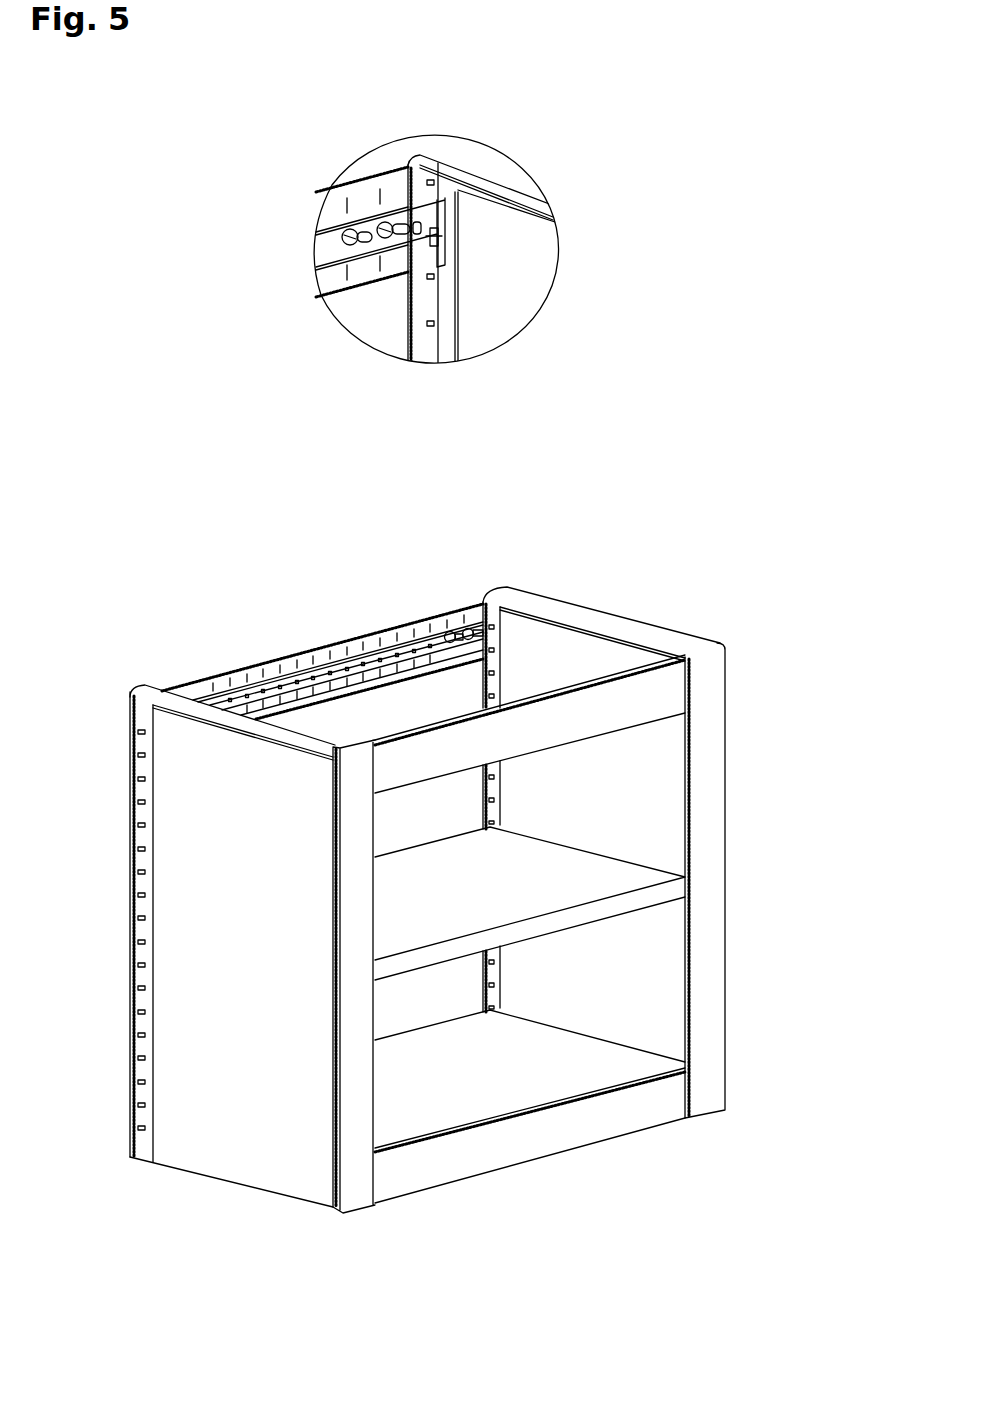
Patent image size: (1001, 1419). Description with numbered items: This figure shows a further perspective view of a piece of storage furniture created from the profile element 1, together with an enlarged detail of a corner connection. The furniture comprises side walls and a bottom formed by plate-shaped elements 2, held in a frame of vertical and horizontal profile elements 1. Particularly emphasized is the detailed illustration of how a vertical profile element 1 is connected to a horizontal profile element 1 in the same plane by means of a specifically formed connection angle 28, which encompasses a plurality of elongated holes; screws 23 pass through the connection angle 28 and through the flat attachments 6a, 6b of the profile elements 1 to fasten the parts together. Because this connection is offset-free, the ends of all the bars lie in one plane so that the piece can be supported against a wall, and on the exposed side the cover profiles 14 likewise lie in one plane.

The profile element 1 is at (320, 648).
The plate-shaped element 2 is at (655, 808).
The flat attachment 6a is at (413, 640).
The flat attachment 6b is at (387, 665).
The cover profile 14 is at (178, 693).
The screw 23 is at (433, 237).
The connection angle 28 is at (417, 227).